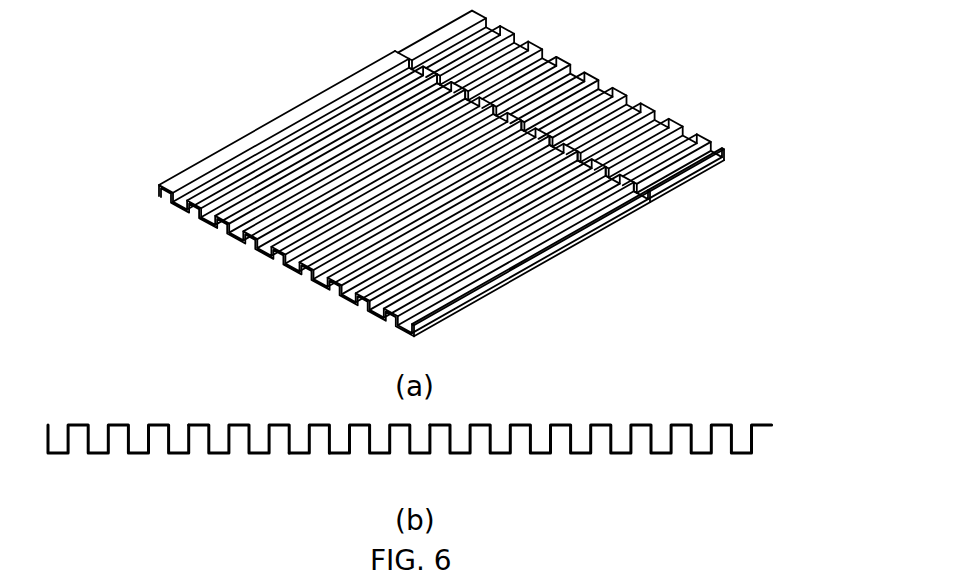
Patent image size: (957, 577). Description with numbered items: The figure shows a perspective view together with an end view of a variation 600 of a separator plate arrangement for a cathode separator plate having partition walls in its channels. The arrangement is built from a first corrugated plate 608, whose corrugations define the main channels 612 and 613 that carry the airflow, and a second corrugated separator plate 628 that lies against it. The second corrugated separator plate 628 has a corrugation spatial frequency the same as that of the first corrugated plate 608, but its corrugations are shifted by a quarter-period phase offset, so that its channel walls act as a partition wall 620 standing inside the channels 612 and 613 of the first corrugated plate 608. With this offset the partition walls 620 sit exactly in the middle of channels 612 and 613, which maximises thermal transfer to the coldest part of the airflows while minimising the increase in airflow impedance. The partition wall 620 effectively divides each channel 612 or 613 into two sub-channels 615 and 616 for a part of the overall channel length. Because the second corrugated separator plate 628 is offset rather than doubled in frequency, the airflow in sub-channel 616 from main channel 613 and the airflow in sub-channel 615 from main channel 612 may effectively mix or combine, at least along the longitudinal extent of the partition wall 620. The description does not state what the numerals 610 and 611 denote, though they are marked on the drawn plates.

The separator plate arrangement 600 is at (177, 82).
The first corrugated plate 608 is at (312, 108).
The base profile 610 is at (202, 222).
The rib 611 is at (540, 50).
The channel 612 is at (312, 277).
The channel 613 is at (352, 307).
The sub-channel 615 is at (720, 141).
The sub-channel 616 is at (610, 178).
The partition wall 620 is at (622, 103).
The second corrugated separator plate 628 is at (455, 31).